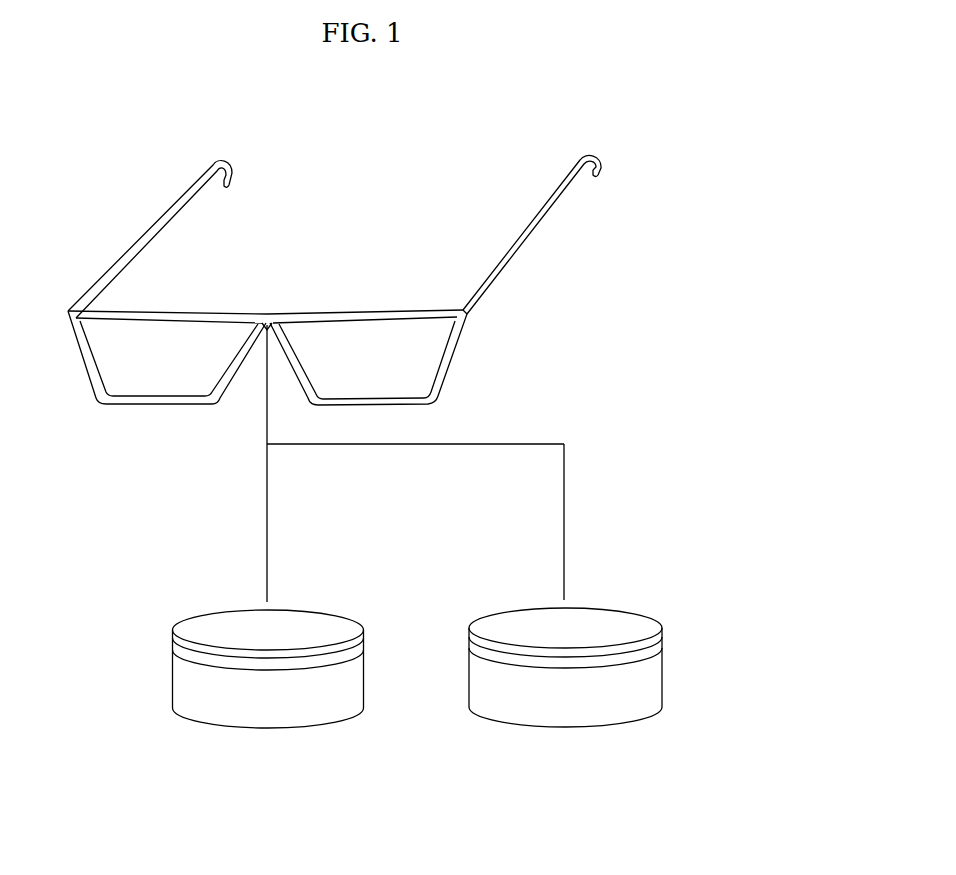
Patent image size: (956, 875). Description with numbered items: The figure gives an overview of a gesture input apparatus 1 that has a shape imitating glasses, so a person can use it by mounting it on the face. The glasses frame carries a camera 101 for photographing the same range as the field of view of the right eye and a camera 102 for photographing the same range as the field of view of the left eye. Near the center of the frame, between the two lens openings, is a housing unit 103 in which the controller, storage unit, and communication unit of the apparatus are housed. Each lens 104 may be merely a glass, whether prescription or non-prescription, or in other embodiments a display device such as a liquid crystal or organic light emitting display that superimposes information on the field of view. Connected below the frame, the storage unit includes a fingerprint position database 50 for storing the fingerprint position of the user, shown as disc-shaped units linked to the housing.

The gesture input apparatus 1 is at (583, 158).
The camera 101 is at (155, 312).
The camera 102 is at (377, 315).
The housing unit 103 is at (267, 313).
The lens 104 is at (203, 337).
The fingerprint position database 50 is at (312, 620).